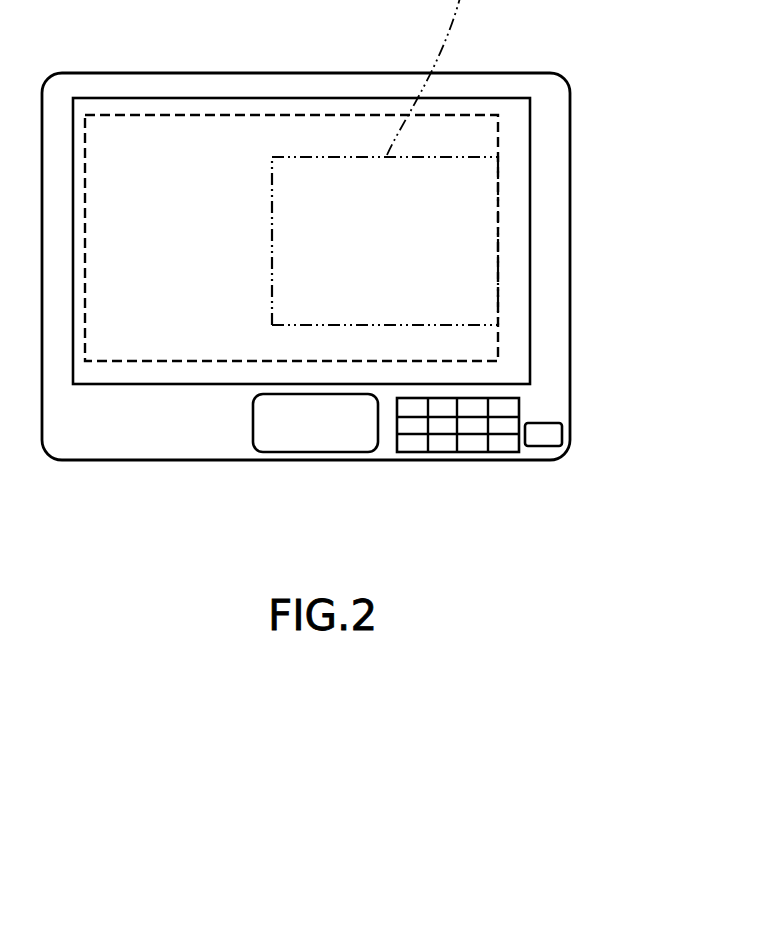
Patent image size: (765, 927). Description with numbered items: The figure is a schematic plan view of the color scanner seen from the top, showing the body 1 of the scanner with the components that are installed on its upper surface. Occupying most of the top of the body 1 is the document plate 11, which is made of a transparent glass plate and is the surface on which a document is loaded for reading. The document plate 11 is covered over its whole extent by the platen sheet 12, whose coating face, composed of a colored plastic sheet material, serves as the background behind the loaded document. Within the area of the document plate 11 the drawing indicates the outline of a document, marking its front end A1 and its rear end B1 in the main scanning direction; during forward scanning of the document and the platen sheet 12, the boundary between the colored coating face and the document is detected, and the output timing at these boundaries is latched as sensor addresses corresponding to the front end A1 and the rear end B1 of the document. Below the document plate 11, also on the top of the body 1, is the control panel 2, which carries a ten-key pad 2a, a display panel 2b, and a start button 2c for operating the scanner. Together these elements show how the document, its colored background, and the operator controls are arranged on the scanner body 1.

The body 1 is at (570, 270).
The control panel 2 is at (423, 484).
The ten-key pad 2a is at (472, 447).
The display panel 2b is at (355, 440).
The start button 2c is at (547, 440).
The document plate 11 is at (200, 113).
The platen sheet 12 is at (115, 97).
The front end of the document A1 is at (317, 325).
The rear end of the document B1 is at (293, 157).